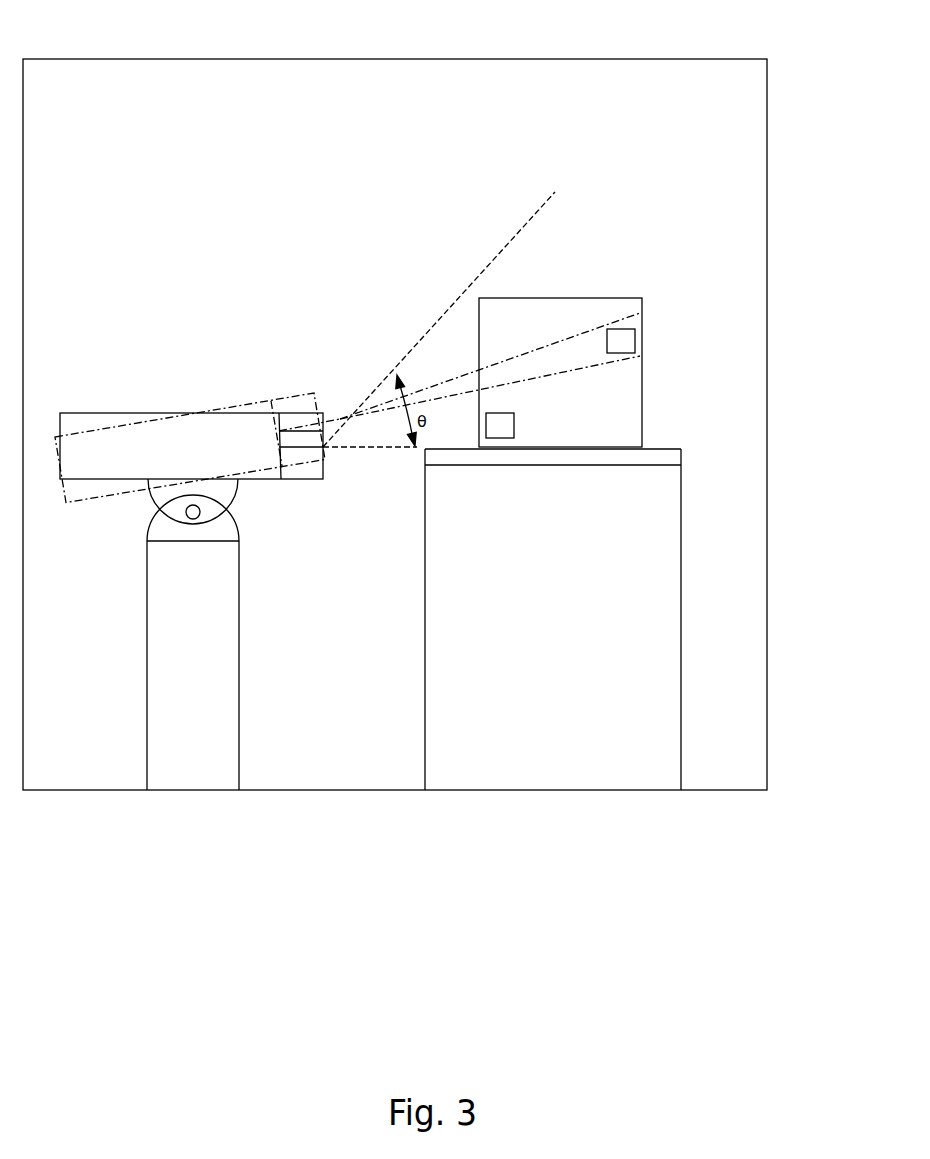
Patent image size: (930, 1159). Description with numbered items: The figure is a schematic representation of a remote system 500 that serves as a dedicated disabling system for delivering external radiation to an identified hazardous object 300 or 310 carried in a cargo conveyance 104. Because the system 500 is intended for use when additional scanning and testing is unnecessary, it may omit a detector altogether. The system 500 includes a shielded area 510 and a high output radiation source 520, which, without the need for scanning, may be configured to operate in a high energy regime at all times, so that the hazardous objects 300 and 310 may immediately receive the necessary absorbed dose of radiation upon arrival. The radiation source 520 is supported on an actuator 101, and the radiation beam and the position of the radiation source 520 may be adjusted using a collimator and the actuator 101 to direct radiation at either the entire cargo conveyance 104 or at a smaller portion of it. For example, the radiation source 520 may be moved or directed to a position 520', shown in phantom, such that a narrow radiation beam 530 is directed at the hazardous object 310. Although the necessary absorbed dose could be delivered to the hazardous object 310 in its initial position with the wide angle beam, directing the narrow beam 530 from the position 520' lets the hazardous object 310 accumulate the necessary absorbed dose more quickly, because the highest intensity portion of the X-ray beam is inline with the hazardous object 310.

The system 500 is at (410, 28).
The shielded area 510 is at (767, 288).
The high output radiation source 520 is at (193, 462).
The position of the radiation source 520' is at (190, 434).
The actuator 101 is at (199, 515).
The cargo conveyance 104 is at (537, 298).
The hazardous object 310 is at (635, 340).
The hazardous object 300 is at (514, 426).
The radiation beam 530 is at (553, 374).